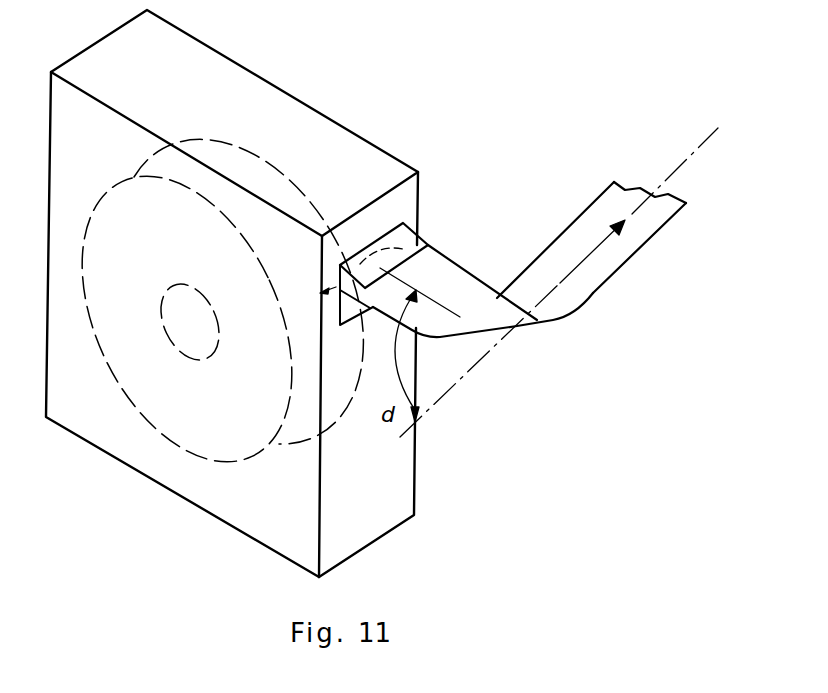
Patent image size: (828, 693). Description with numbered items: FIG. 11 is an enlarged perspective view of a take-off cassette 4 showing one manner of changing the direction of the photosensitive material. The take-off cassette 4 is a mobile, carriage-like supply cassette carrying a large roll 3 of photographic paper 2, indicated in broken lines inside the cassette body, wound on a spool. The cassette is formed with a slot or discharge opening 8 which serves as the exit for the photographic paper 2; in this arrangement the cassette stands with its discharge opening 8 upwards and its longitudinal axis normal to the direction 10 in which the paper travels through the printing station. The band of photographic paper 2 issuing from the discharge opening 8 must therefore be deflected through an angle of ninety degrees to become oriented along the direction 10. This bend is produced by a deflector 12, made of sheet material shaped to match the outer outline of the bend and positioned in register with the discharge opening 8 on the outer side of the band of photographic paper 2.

The photographic paper 2 is at (642, 245).
The roll of photographic paper 3 is at (313, 203).
The take-off cassette 4 is at (367, 141).
The discharge opening 8 is at (426, 246).
The direction of travel 10 is at (575, 268).
The deflector 12 is at (505, 320).